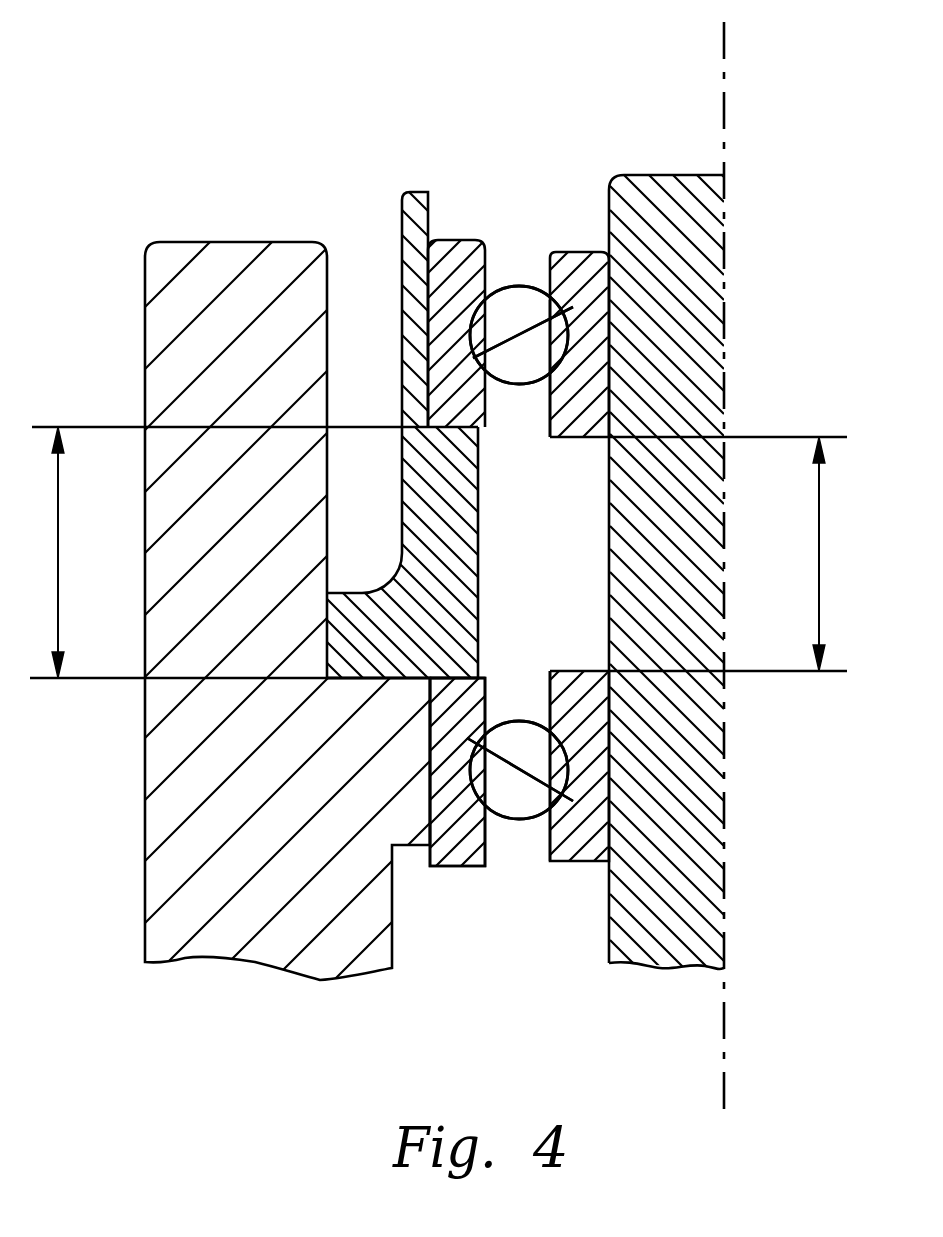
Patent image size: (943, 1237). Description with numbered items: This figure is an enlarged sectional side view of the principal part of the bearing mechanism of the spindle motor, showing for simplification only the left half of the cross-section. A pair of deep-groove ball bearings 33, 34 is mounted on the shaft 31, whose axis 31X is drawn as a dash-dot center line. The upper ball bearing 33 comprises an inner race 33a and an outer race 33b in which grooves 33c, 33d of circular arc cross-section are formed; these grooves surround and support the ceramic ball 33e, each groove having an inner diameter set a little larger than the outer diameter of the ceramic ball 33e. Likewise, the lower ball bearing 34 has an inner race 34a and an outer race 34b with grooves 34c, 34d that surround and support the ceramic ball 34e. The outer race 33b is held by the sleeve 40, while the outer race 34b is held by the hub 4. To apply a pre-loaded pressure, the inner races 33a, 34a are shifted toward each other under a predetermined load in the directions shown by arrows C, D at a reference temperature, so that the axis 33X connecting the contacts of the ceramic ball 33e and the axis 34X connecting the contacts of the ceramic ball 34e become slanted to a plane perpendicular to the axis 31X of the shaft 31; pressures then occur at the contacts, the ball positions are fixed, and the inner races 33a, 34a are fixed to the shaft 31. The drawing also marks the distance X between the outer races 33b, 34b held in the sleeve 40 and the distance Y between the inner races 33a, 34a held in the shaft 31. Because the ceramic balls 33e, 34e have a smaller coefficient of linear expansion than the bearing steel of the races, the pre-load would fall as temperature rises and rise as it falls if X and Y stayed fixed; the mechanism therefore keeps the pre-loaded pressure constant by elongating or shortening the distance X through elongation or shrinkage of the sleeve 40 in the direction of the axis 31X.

The hub 4 is at (230, 275).
The sleeve 40 is at (430, 505).
The shaft 31 is at (700, 409).
The axis of the shaft 31X is at (764, 562).
The ball bearing 33 is at (505, 228).
The inner race 33a is at (585, 270).
The outer race 33b is at (455, 253).
The groove 33c is at (565, 368).
The groove 33d is at (430, 303).
The ceramic ball 33e is at (505, 363).
The axis connecting contacts of the ceramic ball 33X is at (523, 338).
The ball bearing 34 is at (526, 866).
The inner race 34a is at (602, 822).
The outer race 34b is at (450, 852).
The groove 34c is at (565, 737).
The groove 34d is at (470, 798).
The ceramic ball 34e is at (518, 735).
The axis connecting contacts of the ceramic ball 34X is at (497, 752).
The arrow C is at (558, 224).
The arrow D is at (578, 895).
The distance between the outer races X is at (253, 552).
The distance between the inner races Y is at (702, 554).